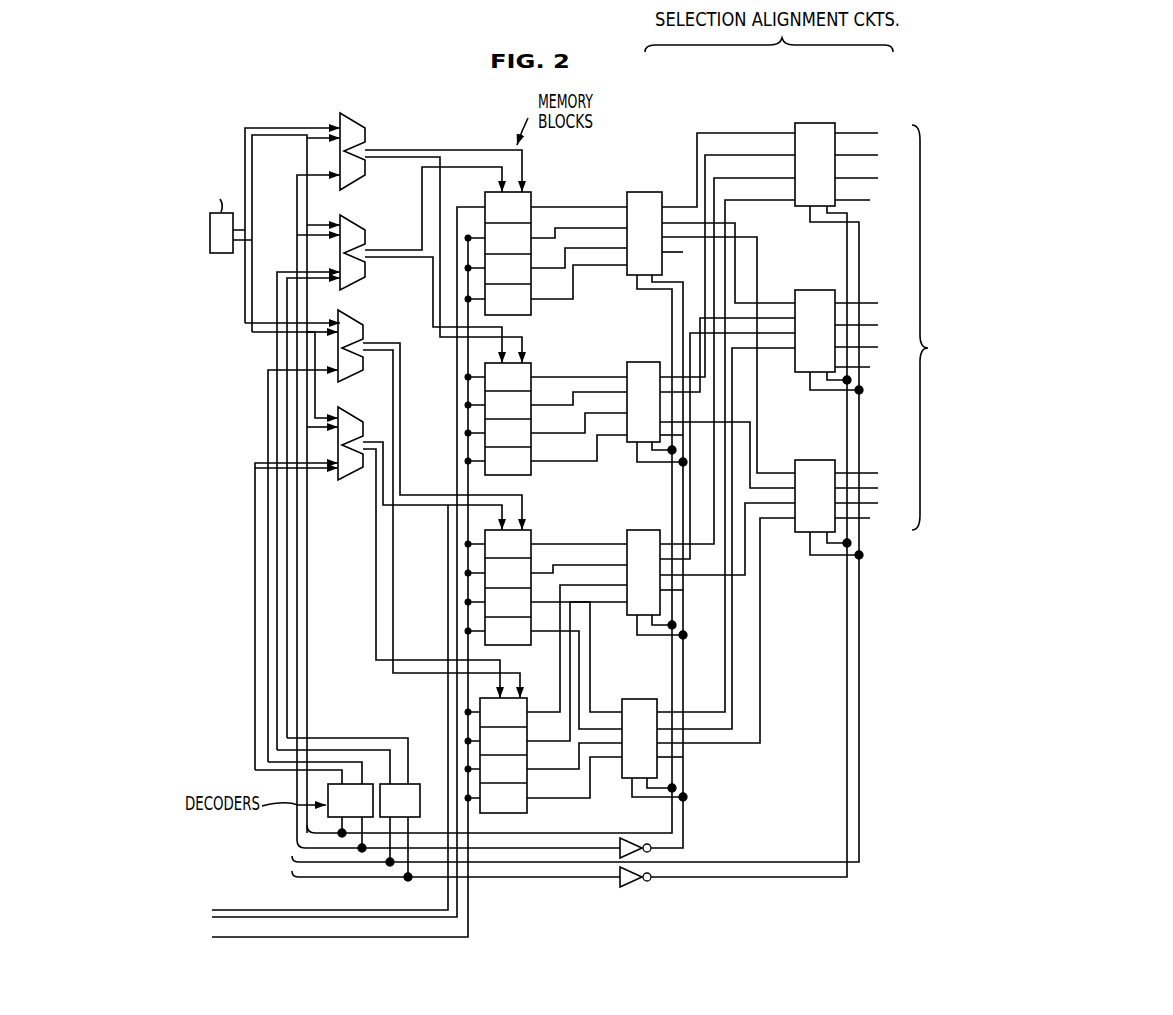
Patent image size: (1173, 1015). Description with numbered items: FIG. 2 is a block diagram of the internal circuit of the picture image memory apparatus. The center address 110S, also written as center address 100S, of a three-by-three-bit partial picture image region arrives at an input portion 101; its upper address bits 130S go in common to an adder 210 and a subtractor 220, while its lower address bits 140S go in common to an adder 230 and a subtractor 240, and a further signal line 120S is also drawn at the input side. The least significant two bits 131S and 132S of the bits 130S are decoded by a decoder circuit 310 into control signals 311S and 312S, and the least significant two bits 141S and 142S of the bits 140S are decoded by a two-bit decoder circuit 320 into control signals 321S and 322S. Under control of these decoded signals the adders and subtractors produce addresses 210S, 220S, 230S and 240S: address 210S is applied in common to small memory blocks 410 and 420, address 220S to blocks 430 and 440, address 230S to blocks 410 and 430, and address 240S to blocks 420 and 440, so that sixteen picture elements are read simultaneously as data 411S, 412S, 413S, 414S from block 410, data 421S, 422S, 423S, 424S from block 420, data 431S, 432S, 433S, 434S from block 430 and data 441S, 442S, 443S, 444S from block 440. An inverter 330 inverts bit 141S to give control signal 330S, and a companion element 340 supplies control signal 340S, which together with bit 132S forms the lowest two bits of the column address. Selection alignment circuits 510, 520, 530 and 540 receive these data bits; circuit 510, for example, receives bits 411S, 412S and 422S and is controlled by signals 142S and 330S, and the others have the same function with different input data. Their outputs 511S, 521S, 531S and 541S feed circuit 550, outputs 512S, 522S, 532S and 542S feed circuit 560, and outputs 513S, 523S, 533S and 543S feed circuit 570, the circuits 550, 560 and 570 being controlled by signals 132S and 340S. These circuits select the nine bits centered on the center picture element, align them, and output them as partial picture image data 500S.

The input portion 101 is at (211, 255).
The center address 110S is at (253, 236).
The upper address bits 130S is at (305, 125).
The lower address bits 140S is at (248, 333).
The input signal line 120S is at (240, 910).
The center address 100S is at (240, 942).
The adder 210 is at (343, 190).
The subtractor 220 is at (352, 283).
The adder 230 is at (342, 384).
The subtractor 240 is at (340, 482).
The address output 210S is at (449, 152).
The address output 220S is at (398, 637).
The address output 230S is at (518, 164).
The address output 240S is at (396, 680).
The decoder circuit 310 is at (400, 800).
The 2-bit decoder circuit 320 is at (350, 800).
The decoded output signal 311S is at (275, 593).
The decoded output signal 312S is at (287, 630).
The decoded signal 321S is at (255, 535).
The decoded signal 322S is at (265, 557).
The inverter 330 is at (633, 838).
The inverter 340 is at (632, 883).
The control signal 330S is at (680, 849).
The control signal 340S is at (720, 880).
The least significant bit 131S is at (565, 878).
The least significant bit 132S is at (528, 864).
The least significant bit 141S is at (576, 848).
The least significant bit 142S is at (524, 833).
The small memory block 410 is at (533, 202).
The small memory block 420 is at (531, 370).
The small memory block 430 is at (531, 537).
The small memory block 440 is at (527, 702).
The picture element data 411S is at (579, 195).
The picture element data 412S is at (579, 221).
The picture element data 421S is at (579, 246).
The picture element data 422S is at (579, 272).
The picture element data 413S is at (614, 372).
The picture element data 414S is at (579, 387).
The picture element data 423S is at (579, 411).
The picture element data 424S is at (579, 436).
The picture element data 431S is at (579, 532).
The picture element data 432S is at (579, 558).
The picture element data 441S is at (577, 639).
The picture element data 442S is at (577, 664).
The picture element data 433S is at (607, 706).
The picture element data 434S is at (576, 681).
The picture element data 443S is at (574, 749).
The picture element data 444S is at (574, 774).
The selection alignment circuit 510 is at (638, 191).
The selection alignment circuit 520 is at (647, 362).
The selection alignment circuit 530 is at (645, 530).
The selection alignment circuit 540 is at (645, 699).
The selection alignment circuit 550 is at (816, 122).
The selection alignment circuit 560 is at (813, 290).
The selection alignment circuit 570 is at (810, 460).
The output data bit 511S is at (778, 133).
The output data bit 521S is at (778, 157).
The output data bit 531S is at (778, 180).
The output data bit 541S is at (778, 202).
The output data bit 512S is at (728, 263).
The output data bit 522S is at (727, 348).
The output data bit 532S is at (727, 443).
The output data bit 542S is at (726, 538).
The output data bit 513S is at (758, 390).
The output data bit 523S is at (752, 423).
The output data bit 533S is at (748, 575).
The output data bit 543S is at (762, 628).
The partial picture image data 500S is at (941, 327).